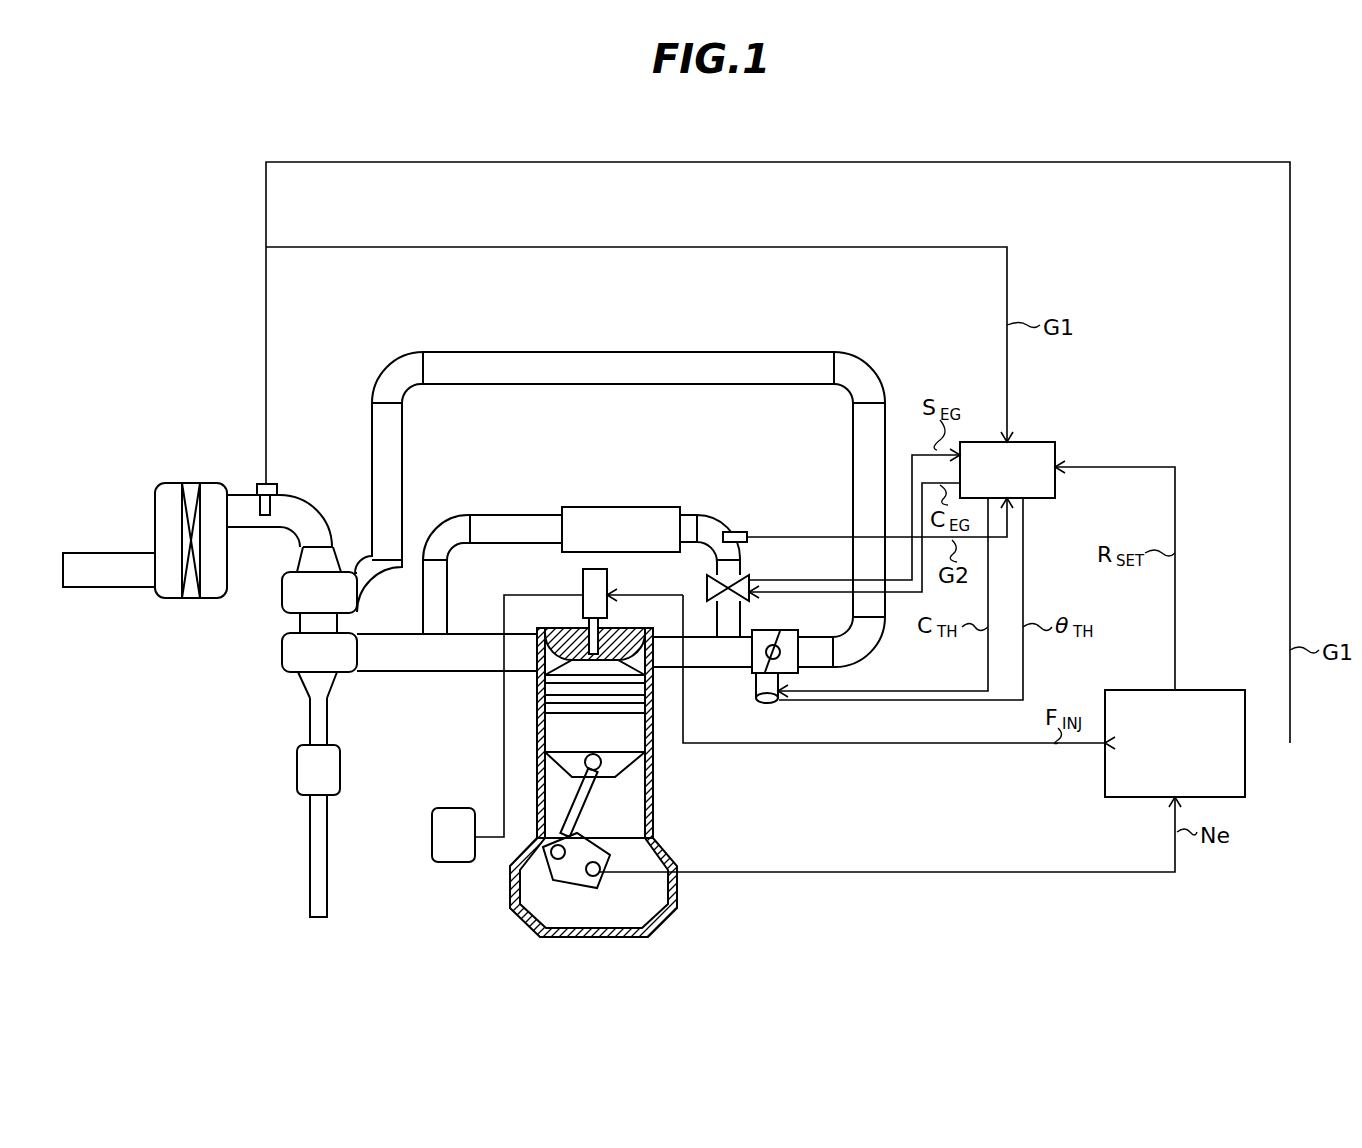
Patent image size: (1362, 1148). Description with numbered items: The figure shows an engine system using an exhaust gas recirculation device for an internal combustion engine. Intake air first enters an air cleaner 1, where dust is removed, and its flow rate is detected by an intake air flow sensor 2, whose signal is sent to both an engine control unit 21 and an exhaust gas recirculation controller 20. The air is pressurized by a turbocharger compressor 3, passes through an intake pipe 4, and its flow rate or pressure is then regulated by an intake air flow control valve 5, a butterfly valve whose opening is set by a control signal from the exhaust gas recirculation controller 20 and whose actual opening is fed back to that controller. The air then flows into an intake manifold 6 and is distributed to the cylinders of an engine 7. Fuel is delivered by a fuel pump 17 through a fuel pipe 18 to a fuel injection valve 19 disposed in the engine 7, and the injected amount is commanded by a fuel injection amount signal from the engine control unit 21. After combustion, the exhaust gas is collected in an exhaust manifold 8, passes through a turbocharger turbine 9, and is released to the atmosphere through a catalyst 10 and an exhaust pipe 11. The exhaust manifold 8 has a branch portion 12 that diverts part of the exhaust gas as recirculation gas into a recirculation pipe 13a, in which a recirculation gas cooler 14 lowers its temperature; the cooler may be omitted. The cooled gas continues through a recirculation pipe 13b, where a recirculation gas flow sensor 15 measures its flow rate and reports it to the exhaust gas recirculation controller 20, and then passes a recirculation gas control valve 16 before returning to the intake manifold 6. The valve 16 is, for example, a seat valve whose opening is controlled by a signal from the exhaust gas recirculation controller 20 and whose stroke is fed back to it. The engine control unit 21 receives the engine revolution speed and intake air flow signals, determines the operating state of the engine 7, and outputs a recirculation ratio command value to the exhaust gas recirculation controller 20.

The air cleaner 1 is at (177, 481).
The intake air flow sensor 2 is at (257, 485).
The turbocharger compressor 3 is at (288, 592).
The intake pipe 4 is at (626, 356).
The intake air flow control valve 5 is at (768, 705).
The intake manifold 6 is at (728, 650).
The engine 7 is at (667, 913).
The exhaust manifold 8 is at (472, 655).
The turbocharger turbine 9 is at (295, 662).
The catalyst 10 is at (305, 763).
The exhaust pipe 11 is at (313, 896).
The branch portion 12 is at (437, 634).
The recirculation pipe 13a is at (497, 518).
The recirculation pipe 13b is at (710, 515).
The recirculation gas cooler 14 is at (653, 513).
The recirculation gas flow sensor 15 is at (740, 531).
The recirculation gas control valve 16 is at (752, 560).
The fuel pump 17 is at (447, 845).
The fuel pipe 18 is at (504, 757).
The fuel injection valve 19 is at (592, 578).
The exhaust gas recirculation controller 20 is at (1040, 441).
The engine control unit 21 is at (1212, 690).